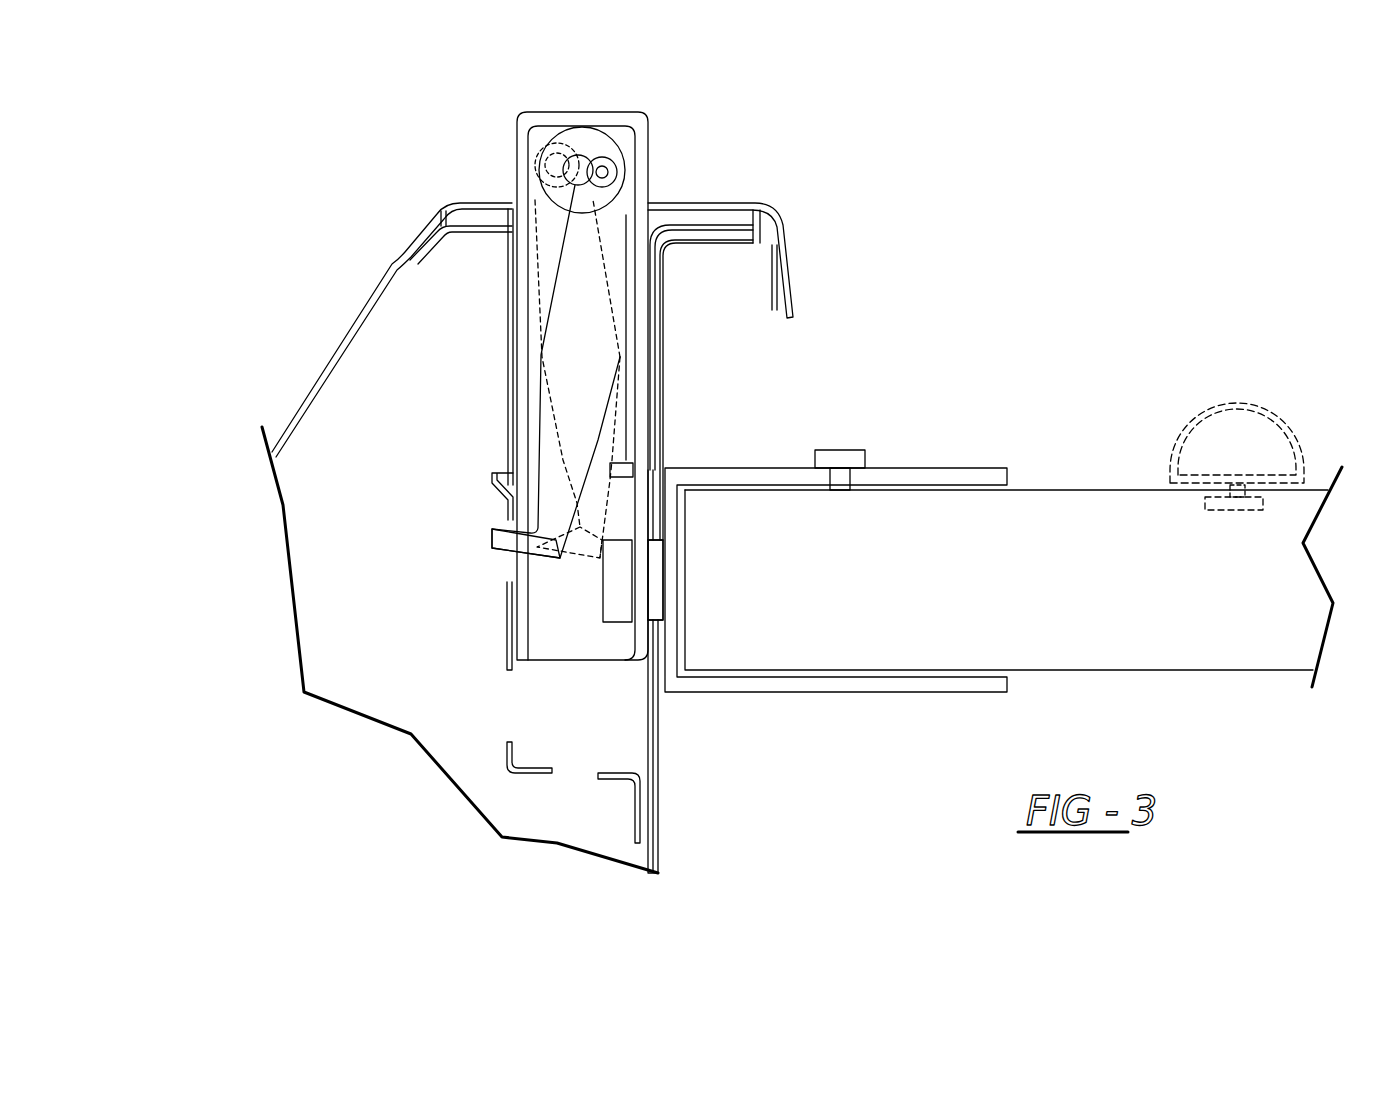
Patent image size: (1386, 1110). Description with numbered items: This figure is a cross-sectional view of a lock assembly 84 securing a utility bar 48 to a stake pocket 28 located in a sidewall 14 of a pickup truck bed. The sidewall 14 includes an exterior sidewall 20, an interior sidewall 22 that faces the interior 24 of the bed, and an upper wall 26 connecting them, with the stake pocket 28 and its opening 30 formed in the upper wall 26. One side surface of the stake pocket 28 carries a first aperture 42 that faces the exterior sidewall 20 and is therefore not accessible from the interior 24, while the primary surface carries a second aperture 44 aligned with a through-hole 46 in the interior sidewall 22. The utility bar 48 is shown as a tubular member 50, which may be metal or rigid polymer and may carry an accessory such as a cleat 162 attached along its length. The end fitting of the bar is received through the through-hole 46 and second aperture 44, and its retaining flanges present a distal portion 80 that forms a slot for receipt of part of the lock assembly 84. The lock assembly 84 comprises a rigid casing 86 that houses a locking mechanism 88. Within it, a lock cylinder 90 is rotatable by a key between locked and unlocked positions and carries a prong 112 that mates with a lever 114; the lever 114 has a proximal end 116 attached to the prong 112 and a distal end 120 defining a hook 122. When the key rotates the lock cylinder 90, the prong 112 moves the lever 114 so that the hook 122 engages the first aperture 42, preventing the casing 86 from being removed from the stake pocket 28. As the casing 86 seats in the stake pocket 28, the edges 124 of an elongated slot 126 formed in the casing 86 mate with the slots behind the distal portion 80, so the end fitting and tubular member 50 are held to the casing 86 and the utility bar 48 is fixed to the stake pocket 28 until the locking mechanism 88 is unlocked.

The sidewall 14 is at (333, 333).
The exterior sidewall 20 is at (378, 282).
The interior sidewall 22 is at (662, 367).
The interior 24 is at (952, 306).
The upper wall 26 is at (777, 208).
The stake pocket 28 is at (505, 772).
The opening 30 is at (520, 193).
The first aperture 42 is at (507, 582).
The second aperture 44 is at (653, 640).
The through-hole 46 is at (667, 548).
The utility bar 48 is at (1064, 491).
The tubular member 50 is at (1130, 648).
The distal portion 80 is at (612, 603).
The lock assembly 84 is at (651, 155).
The casing 86 is at (650, 122).
The locking mechanism 88 is at (543, 258).
The lock cylinder 90 is at (593, 137).
The prong 112 is at (602, 173).
The lever 114 is at (607, 243).
The proximal end 116 is at (613, 215).
The distal end 120 is at (547, 557).
The hook 122 is at (492, 538).
The edges 124 is at (648, 572).
The elongated slot 126 is at (655, 580).
The cleat 162 is at (1250, 412).